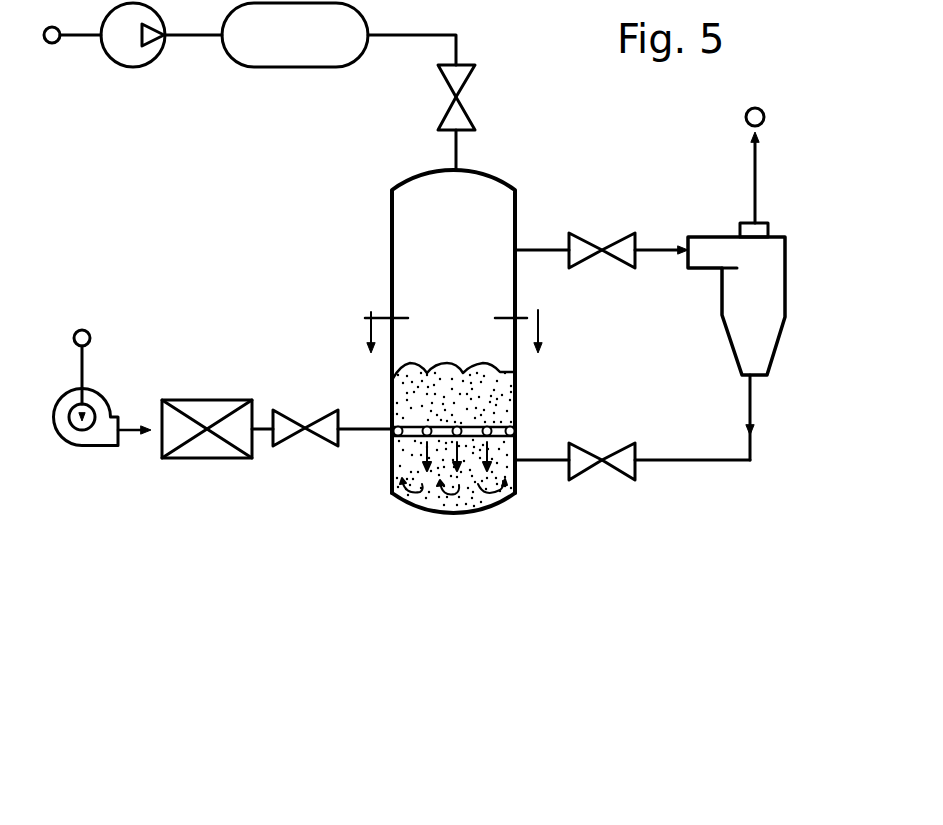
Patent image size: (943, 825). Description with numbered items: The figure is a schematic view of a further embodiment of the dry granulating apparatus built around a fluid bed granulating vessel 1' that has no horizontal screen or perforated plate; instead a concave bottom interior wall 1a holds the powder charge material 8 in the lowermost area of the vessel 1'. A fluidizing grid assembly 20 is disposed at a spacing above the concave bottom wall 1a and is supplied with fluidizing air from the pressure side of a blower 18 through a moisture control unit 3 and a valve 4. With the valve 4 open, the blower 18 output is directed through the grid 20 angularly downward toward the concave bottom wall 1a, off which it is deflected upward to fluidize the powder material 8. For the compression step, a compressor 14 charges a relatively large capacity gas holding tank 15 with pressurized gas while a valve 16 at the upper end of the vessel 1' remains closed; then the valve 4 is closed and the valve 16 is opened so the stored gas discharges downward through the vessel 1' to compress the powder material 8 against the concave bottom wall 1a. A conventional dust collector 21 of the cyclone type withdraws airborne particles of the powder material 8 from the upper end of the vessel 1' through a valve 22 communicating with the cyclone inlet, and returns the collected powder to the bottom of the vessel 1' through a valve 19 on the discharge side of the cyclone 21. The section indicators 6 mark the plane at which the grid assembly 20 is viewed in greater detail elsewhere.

The fluid bed granulating vessel 1' is at (419, 331).
The concave bottom interior wall 1a is at (412, 508).
The moisture control unit 3 is at (190, 460).
The valve 4 is at (295, 440).
The section plane 6 is at (453, 330).
The powder charge material 8 is at (482, 492).
The compressor 14 is at (135, 68).
The gas holding tank 15 is at (305, 68).
The valve 16 is at (467, 110).
The blower 18 is at (75, 448).
The valve 19 is at (620, 476).
The fluidizing grid assembly 20 is at (500, 420).
The dust collector 21 is at (787, 287).
The valve 22 is at (610, 233).